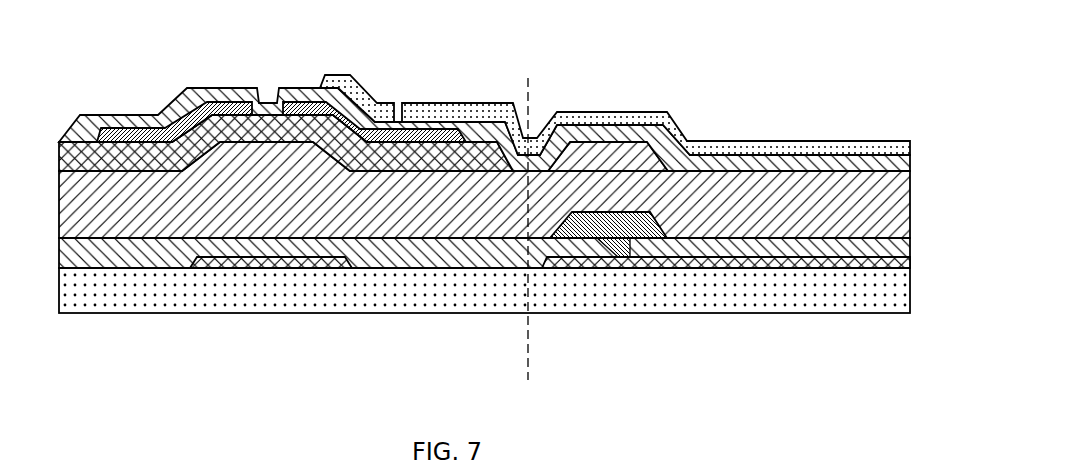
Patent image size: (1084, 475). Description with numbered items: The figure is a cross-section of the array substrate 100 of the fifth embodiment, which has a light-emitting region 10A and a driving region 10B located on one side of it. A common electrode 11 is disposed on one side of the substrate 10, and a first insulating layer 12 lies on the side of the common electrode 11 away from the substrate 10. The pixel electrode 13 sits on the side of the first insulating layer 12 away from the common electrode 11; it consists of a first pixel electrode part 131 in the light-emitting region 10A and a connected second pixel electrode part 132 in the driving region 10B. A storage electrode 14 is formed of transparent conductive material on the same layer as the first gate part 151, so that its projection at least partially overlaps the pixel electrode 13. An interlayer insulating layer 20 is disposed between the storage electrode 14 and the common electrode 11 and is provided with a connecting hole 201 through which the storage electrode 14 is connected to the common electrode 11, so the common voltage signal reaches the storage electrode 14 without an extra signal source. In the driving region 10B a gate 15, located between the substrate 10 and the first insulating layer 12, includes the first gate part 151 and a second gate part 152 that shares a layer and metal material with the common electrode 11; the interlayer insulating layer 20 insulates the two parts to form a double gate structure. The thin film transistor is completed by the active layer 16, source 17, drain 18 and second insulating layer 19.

The array substrate 100 is at (499, 197).
The common electrode 11 is at (692, 285).
The substrate 10 is at (893, 262).
The light-emitting region 10A is at (877, 329).
The driving region 10B is at (481, 328).
The interlayer insulating layer 20 is at (509, 300).
The connecting hole 201 is at (623, 252).
The storage electrode 14 is at (573, 238).
The gate 15 is at (271, 296).
The first gate part 151 is at (227, 268).
The second gate part 152 is at (293, 232).
The first insulating layer 12 is at (893, 204).
The active layer 16 is at (155, 155).
The source 17 is at (222, 107).
The drain 18 is at (303, 100).
The second insulating layer 19 is at (893, 165).
The pixel electrode 13 is at (615, 87).
The first pixel electrode part 131 is at (587, 115).
The second pixel electrode part 132 is at (487, 113).